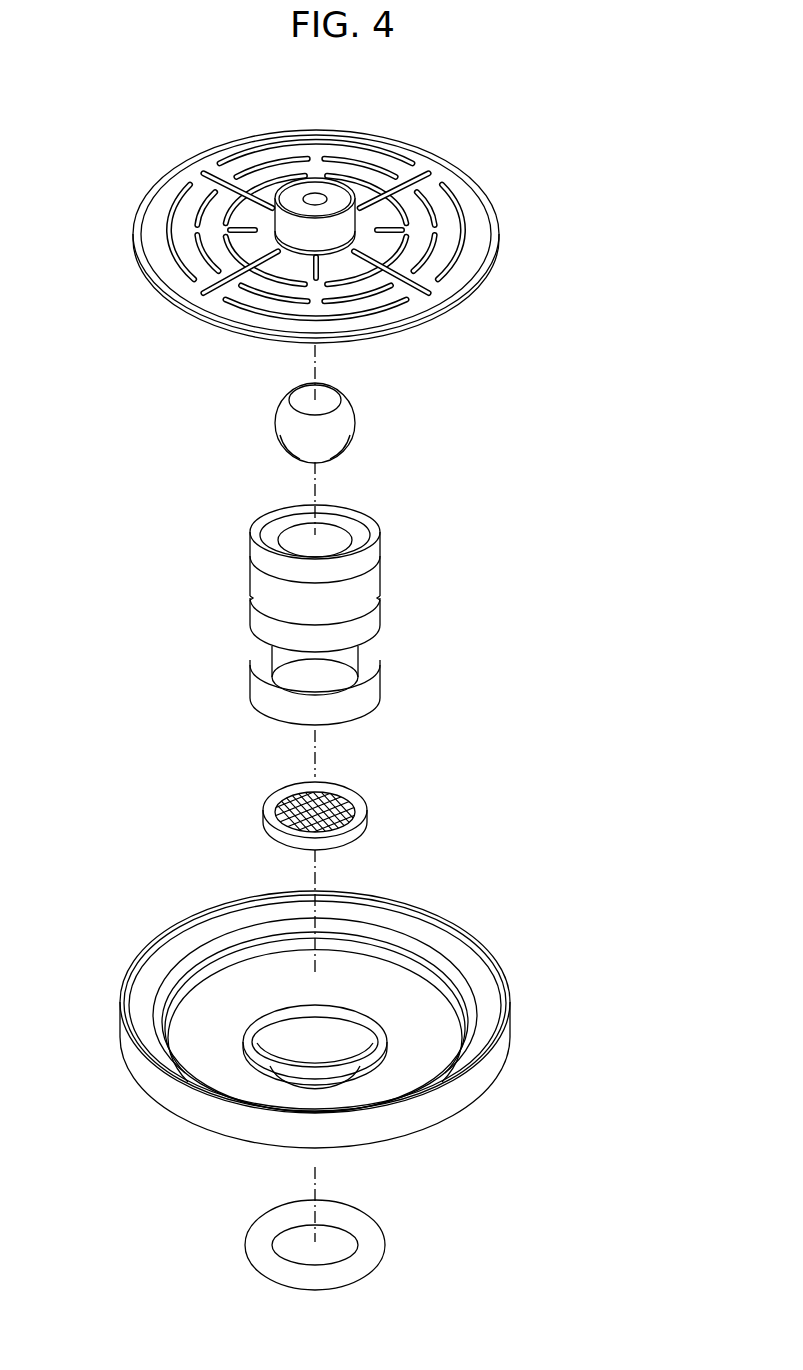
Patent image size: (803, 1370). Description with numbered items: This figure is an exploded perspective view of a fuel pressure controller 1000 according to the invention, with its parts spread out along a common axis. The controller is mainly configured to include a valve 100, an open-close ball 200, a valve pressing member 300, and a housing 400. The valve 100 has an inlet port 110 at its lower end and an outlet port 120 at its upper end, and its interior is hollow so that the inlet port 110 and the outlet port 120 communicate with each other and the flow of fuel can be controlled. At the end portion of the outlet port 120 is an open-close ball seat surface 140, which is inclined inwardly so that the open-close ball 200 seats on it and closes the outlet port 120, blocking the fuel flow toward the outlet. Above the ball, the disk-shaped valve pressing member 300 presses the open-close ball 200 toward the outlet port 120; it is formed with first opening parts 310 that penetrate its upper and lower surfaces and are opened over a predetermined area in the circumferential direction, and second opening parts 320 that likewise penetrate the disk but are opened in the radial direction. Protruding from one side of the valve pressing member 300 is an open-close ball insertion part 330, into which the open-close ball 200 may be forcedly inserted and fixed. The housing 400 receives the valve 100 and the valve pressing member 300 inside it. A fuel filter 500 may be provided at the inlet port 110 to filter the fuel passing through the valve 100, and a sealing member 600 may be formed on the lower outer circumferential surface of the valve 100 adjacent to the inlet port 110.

The fuel pressure controller 1000 is at (561, 428).
The valve pressing member 300 is at (439, 138).
The first opening parts 310 is at (460, 231).
The second opening parts 320 is at (430, 293).
The open-close ball insertion part 330 is at (314, 188).
The open-close ball 200 is at (345, 418).
The valve 100 is at (404, 574).
The open-close ball seat surface 140 is at (287, 527).
The outlet port 120 is at (333, 537).
The inlet port 110 is at (328, 722).
The fuel filter 500 is at (251, 802).
The housing 400 is at (127, 927).
The sealing member 600 is at (234, 1216).